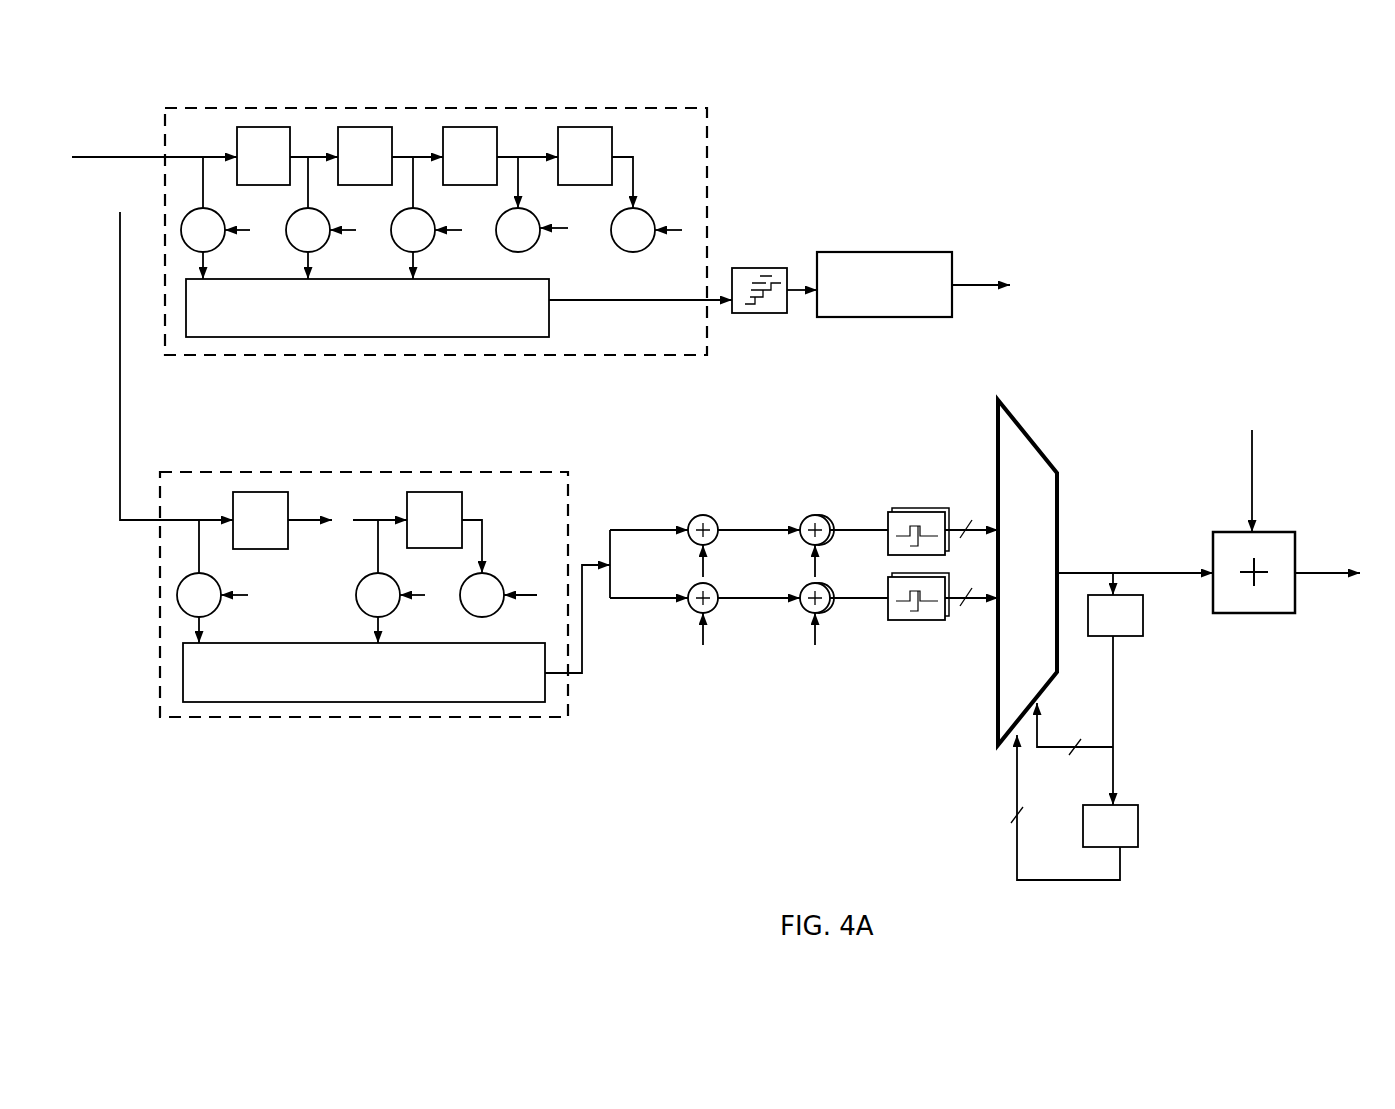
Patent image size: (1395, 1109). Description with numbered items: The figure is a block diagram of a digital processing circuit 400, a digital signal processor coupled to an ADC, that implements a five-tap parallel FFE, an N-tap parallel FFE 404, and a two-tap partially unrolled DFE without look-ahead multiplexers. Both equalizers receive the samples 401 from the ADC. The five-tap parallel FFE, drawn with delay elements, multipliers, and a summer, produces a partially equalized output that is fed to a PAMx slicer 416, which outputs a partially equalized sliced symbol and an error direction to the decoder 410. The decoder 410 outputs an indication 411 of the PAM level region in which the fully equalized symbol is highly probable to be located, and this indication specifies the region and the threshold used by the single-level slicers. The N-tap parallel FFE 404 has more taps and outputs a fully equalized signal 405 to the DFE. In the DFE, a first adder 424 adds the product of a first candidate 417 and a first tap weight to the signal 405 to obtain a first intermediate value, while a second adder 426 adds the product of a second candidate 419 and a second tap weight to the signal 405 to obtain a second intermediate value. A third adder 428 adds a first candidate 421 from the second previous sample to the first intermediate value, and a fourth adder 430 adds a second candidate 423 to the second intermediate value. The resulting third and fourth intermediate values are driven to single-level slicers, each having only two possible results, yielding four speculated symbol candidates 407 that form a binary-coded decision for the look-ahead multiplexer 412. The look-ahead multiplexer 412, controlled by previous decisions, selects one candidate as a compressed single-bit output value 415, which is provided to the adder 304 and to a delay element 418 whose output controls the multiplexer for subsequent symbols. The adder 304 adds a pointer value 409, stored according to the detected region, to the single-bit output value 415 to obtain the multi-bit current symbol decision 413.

The digital processing circuit 400 is at (118, 91).
The samples 401 is at (107, 160).
The N-tap parallel FFE 404 is at (364, 579).
The signal 405 is at (588, 676).
The PAMx slicer 416 is at (780, 263).
The decoder 410 is at (869, 284).
The indication 411 is at (1008, 281).
The speculated symbol candidates 407 is at (948, 435).
The look-ahead multiplexer 412 is at (1030, 436).
The output value 415 is at (1184, 572).
The pointer value 409 is at (1253, 470).
The adder 304 is at (1214, 590).
The delay element 418 is at (1130, 636).
The current symbol decision 413 is at (1316, 575).
The first adder 424 is at (711, 516).
The first candidate 417 is at (703, 575).
The third adder 428 is at (811, 516).
The first candidate 421 is at (813, 575).
The second adder 426 is at (688, 603).
The second candidate 419 is at (703, 645).
The fourth adder 430 is at (806, 612).
The second candidate 423 is at (815, 648).